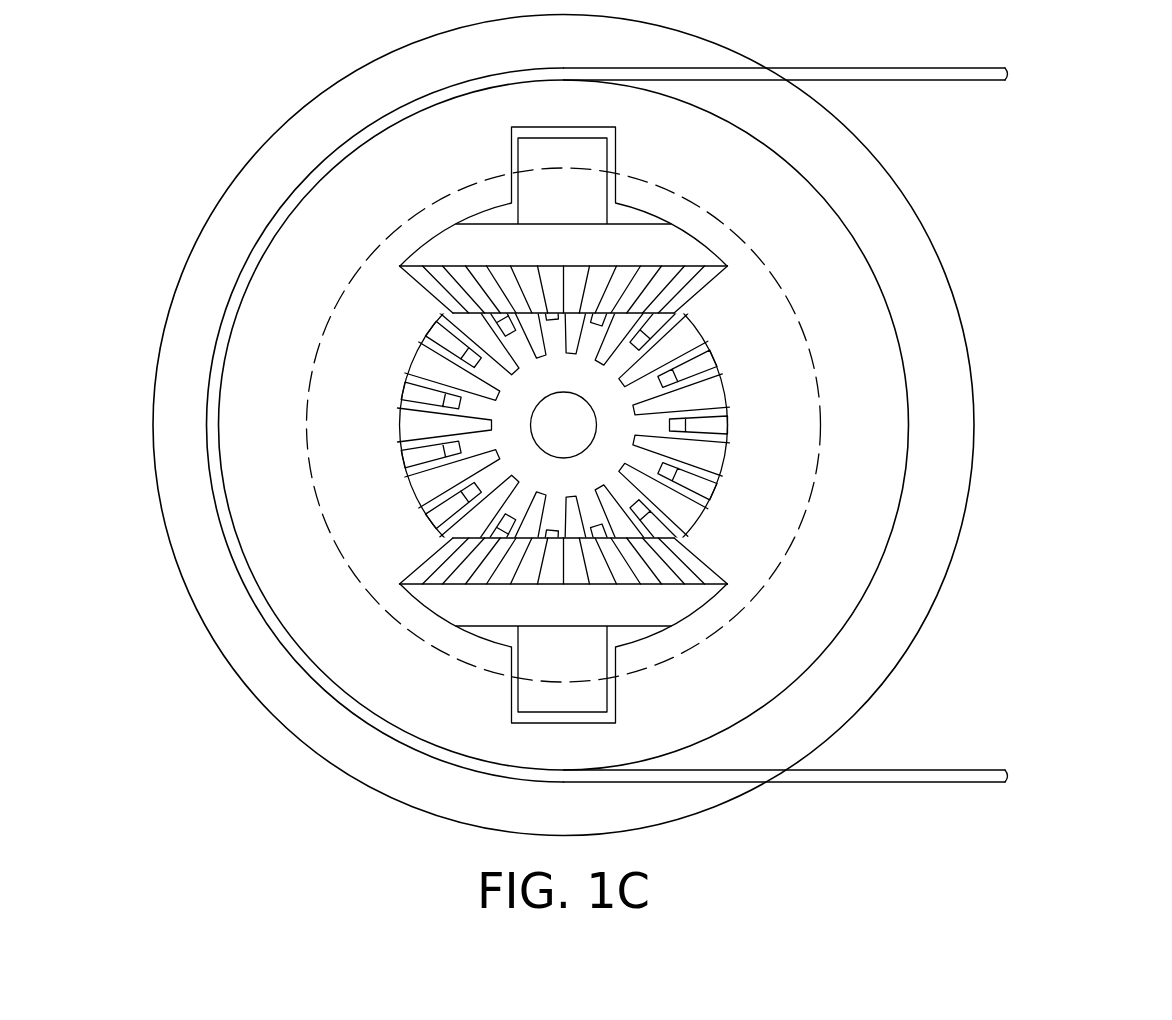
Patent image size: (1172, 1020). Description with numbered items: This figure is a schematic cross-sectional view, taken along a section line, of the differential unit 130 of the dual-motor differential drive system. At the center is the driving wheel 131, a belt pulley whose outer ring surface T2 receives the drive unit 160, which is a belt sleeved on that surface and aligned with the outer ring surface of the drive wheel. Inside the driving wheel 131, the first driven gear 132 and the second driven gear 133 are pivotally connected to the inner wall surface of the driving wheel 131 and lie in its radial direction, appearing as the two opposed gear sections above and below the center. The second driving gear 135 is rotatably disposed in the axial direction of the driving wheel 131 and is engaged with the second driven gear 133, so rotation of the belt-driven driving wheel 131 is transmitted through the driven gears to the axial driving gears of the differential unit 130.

The differential unit 130 is at (1098, 362).
The driving wheel 131 is at (865, 387).
The first driven gear 132 is at (632, 607).
The second driven gear 133 is at (662, 245).
The second driving gear 135 is at (605, 430).
The drive unit 160 is at (942, 74).
The outer ring surface T2 is at (883, 293).